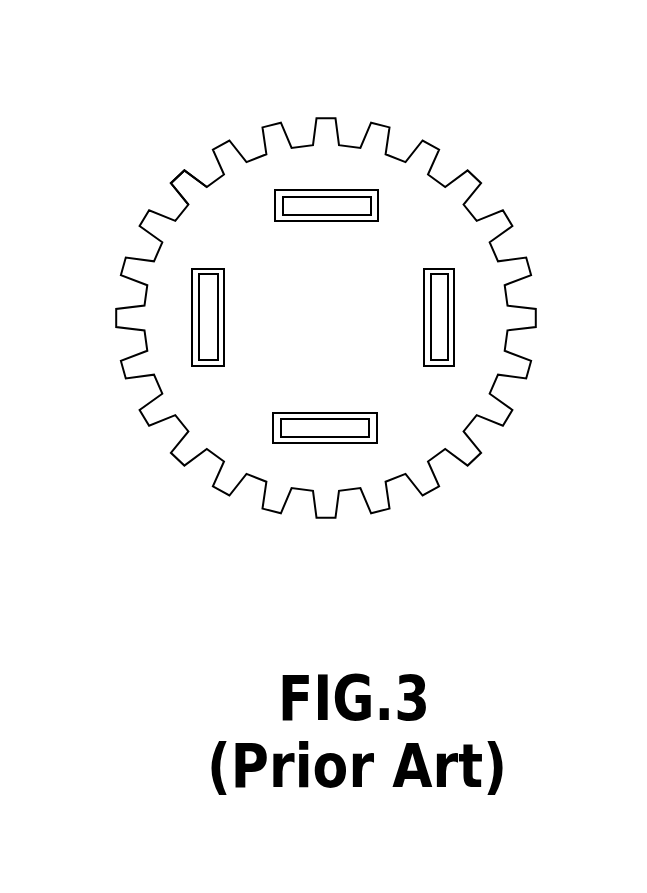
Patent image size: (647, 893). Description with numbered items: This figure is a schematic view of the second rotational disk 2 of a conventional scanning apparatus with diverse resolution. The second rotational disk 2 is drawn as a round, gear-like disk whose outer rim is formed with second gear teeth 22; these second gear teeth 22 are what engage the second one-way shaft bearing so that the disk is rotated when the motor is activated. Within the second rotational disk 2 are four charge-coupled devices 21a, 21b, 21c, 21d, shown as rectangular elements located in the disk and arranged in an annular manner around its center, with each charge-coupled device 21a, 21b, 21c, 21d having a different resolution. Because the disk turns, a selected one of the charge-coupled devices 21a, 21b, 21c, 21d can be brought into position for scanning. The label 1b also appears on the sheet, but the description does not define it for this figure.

The second rotational disk 2 is at (421, 97).
The second gear teeth 22 is at (187, 183).
The charge-coupled device 21a is at (307, 203).
The charge-coupled device 21b is at (440, 342).
The charge-coupled device 21c is at (326, 427).
The charge-coupled device 21d is at (208, 337).
The shaft 1b is at (20, 289).